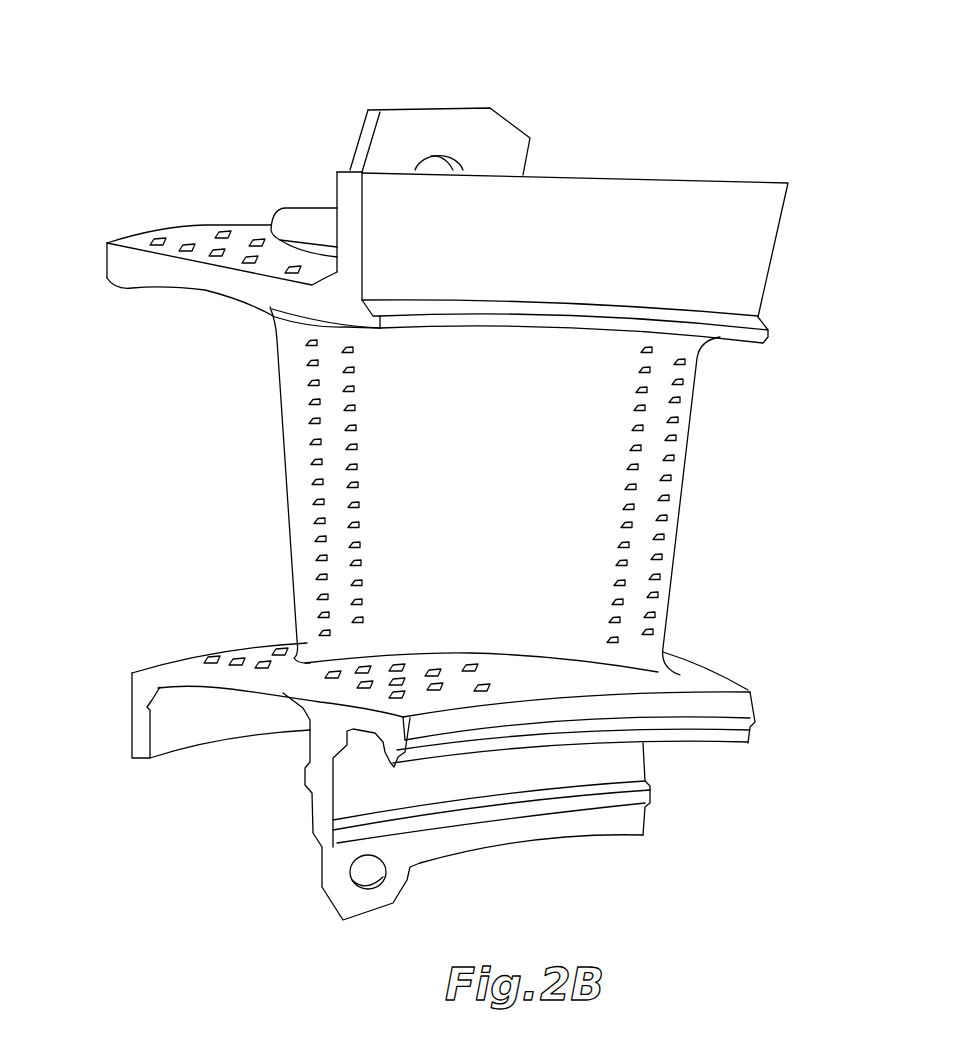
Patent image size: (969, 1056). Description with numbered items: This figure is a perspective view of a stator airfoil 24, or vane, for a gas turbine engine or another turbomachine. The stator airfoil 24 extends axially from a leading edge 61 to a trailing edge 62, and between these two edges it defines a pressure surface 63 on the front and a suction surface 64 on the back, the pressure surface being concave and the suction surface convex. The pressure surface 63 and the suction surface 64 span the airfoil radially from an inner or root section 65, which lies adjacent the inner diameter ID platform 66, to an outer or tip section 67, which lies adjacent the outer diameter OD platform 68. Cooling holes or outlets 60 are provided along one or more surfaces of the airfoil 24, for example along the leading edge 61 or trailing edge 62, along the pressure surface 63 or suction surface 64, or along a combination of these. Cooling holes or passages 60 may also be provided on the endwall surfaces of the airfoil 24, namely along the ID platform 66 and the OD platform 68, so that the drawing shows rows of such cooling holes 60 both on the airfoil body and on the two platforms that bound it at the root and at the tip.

The stator airfoil 24 is at (443, 461).
The cooling holes 60 is at (225, 237).
The leading edge 61 is at (277, 372).
The trailing edge 62 is at (677, 548).
The pressure surface 63 is at (400, 500).
The suction surface 64 is at (682, 492).
The inner section 65 is at (302, 641).
The ID platform 66 is at (743, 702).
The outer section 67 is at (290, 333).
The OD platform 68 is at (122, 272).